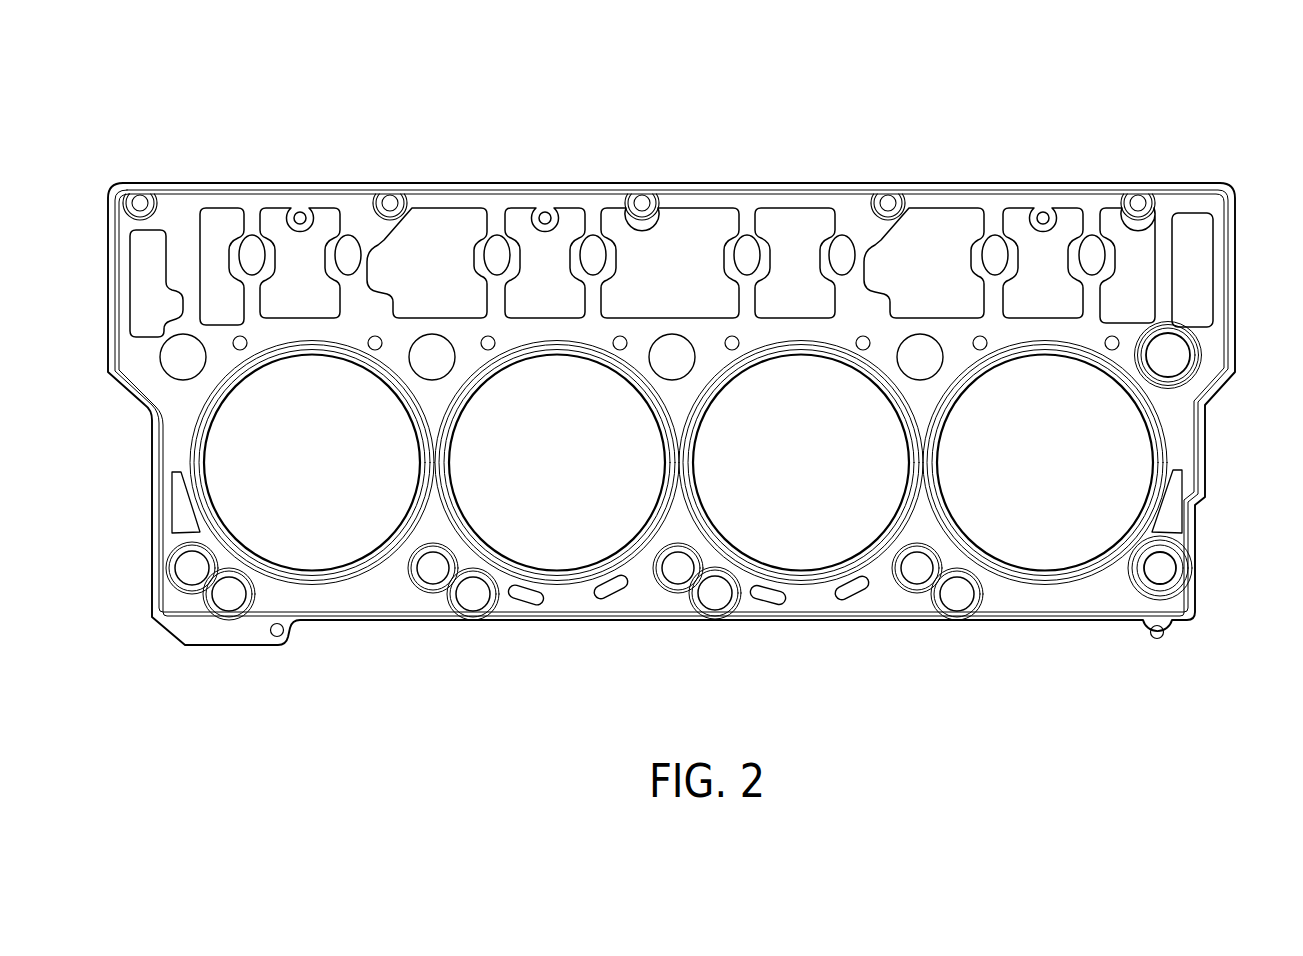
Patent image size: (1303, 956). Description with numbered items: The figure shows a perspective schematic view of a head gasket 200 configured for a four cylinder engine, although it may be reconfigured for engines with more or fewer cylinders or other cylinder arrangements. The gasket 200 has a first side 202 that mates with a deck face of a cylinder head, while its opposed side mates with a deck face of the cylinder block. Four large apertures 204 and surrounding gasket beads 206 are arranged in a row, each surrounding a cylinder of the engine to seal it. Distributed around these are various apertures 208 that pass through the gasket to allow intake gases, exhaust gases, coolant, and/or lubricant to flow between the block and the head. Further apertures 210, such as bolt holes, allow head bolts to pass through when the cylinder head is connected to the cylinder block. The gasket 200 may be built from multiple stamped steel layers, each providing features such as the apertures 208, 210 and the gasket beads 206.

The head gasket 200 is at (962, 119).
The first side 202 is at (1163, 413).
The apertures 204 is at (316, 560).
The gasket beads 206 is at (804, 592).
The apertures 208 is at (702, 198).
The apertures 210 is at (1194, 363).